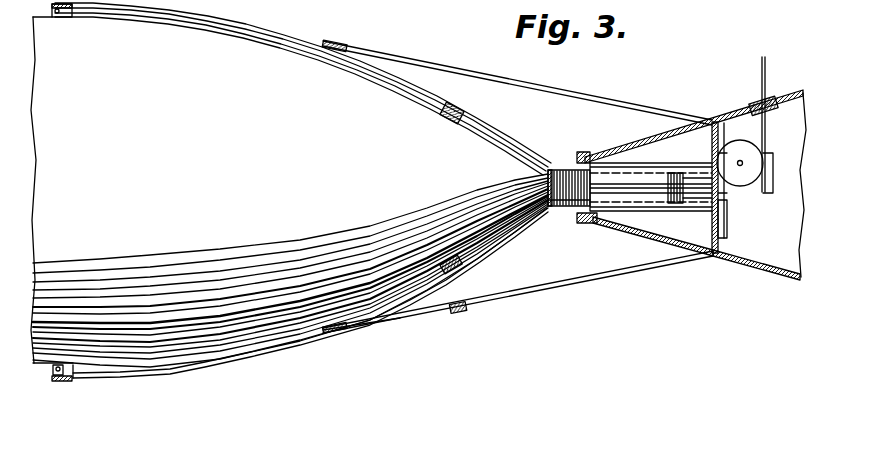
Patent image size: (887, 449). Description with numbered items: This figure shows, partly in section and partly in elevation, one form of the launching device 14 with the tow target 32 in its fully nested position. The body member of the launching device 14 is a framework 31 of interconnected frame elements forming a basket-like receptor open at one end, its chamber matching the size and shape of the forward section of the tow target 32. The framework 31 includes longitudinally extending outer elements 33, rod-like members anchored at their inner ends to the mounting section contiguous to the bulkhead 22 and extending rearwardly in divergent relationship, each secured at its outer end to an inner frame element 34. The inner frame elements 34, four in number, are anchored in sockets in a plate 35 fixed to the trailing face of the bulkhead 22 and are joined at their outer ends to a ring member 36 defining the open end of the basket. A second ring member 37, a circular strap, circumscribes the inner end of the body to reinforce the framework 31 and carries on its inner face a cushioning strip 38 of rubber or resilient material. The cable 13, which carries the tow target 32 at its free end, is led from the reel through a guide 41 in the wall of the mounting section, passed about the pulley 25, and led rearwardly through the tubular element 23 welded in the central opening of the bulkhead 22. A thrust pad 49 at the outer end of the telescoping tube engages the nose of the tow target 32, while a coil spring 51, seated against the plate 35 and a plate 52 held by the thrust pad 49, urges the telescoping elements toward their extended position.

The cable 13 is at (692, 190).
The launching device 14 is at (368, 334).
The bulkhead 22 is at (720, 238).
The tubular element 23 is at (633, 196).
The pulley 25 is at (752, 177).
The framework 31 is at (453, 309).
The tow target 32 is at (298, 300).
The outer elements 33 is at (602, 97).
The inner frame element 34 is at (205, 370).
The plate 35 is at (713, 158).
The ring member 36 is at (62, 380).
The second ring member 37 is at (460, 113).
The cushioning strip 38 is at (443, 113).
The guide 41 is at (767, 100).
The thrust pad 49 is at (547, 182).
The coil spring 51 is at (562, 208).
The plate 52 is at (549, 168).